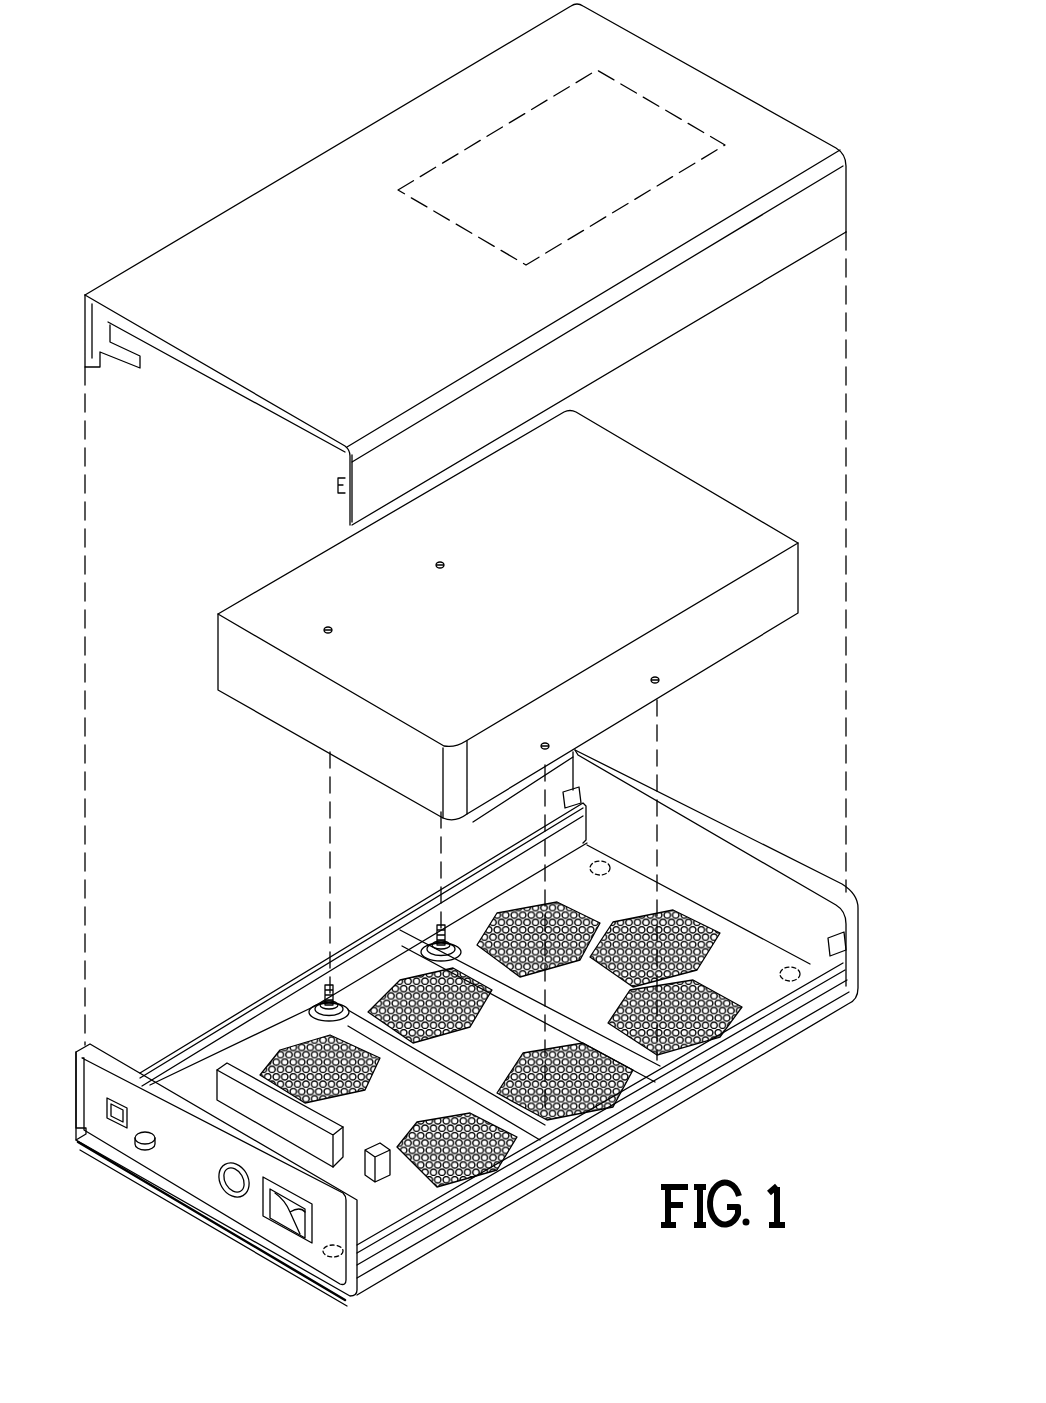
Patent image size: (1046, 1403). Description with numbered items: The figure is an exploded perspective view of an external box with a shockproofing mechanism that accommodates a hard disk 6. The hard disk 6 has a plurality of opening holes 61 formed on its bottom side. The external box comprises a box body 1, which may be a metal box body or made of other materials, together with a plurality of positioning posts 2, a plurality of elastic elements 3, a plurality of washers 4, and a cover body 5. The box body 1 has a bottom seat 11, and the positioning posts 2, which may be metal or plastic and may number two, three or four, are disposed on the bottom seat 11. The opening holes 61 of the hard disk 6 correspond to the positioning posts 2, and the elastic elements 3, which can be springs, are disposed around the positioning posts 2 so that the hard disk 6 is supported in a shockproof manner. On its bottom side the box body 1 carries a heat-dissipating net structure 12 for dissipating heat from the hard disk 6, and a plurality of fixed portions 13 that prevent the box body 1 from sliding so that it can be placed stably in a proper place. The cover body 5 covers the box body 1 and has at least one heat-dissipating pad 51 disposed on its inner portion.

The box body 1 is at (473, 1028).
The bottom seat 11 is at (756, 1003).
The heat-dissipating net structure 12 is at (677, 1058).
The fixed portions 13 is at (809, 1005).
The positioning posts 2 is at (314, 996).
The elastic elements 3 is at (311, 999).
The washers 4 is at (432, 928).
The cover body 5 is at (158, 258).
The heat-dissipating pad 51 is at (638, 92).
The hard disk 6 is at (508, 614).
The opening holes 61 is at (665, 680).